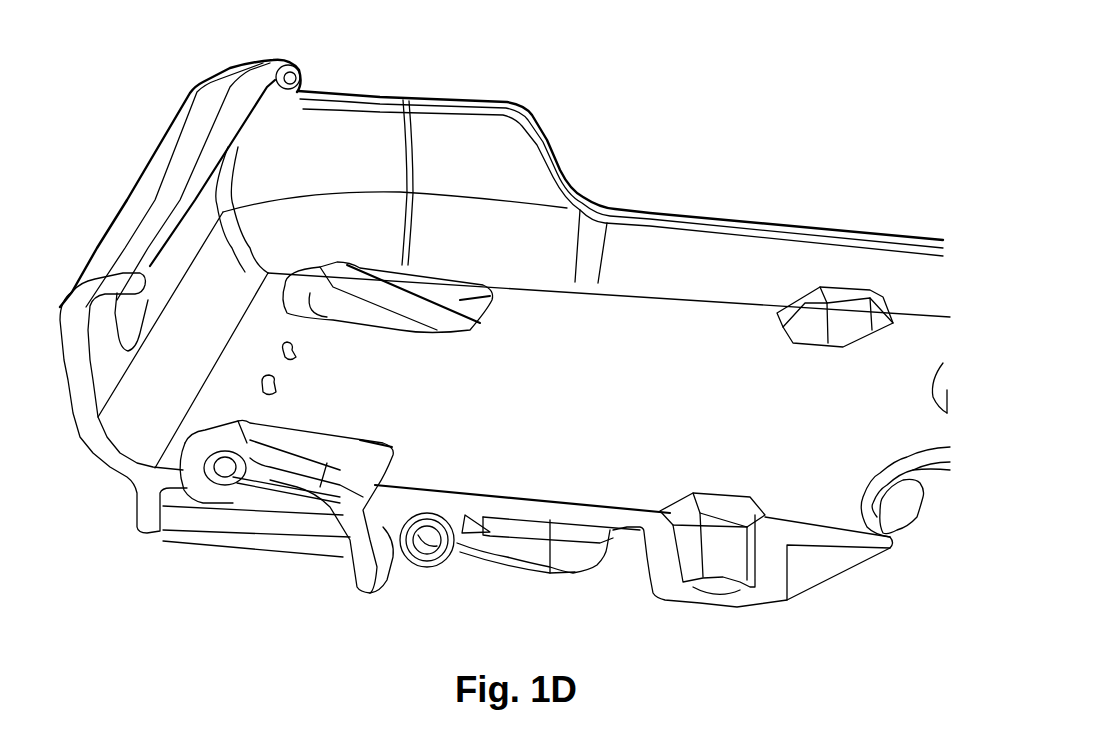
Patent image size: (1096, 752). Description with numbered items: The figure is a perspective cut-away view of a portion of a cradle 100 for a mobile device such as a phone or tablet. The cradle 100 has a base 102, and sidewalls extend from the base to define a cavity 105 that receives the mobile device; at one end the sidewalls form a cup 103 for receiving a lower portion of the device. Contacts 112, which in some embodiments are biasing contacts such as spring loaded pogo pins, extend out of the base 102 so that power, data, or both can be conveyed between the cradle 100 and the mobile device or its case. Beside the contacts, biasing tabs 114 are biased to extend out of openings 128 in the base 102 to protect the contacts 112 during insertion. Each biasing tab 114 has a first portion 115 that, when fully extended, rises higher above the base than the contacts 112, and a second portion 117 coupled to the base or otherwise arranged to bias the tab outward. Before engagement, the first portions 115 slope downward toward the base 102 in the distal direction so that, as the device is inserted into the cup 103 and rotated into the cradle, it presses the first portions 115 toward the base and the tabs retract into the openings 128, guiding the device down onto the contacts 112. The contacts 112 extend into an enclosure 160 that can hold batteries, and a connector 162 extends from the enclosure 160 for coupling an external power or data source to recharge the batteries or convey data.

The cradle 100 is at (505, 326).
The base 102 is at (705, 380).
The cup 103 is at (247, 70).
The cavity 105 is at (638, 326).
The contacts 112 is at (280, 390).
The biasing tabs 114 is at (395, 303).
The first portion 115 is at (387, 280).
The second portion 117 is at (387, 563).
The openings 128 is at (482, 305).
The enclosure 160 is at (573, 573).
The connector 162 is at (452, 553).